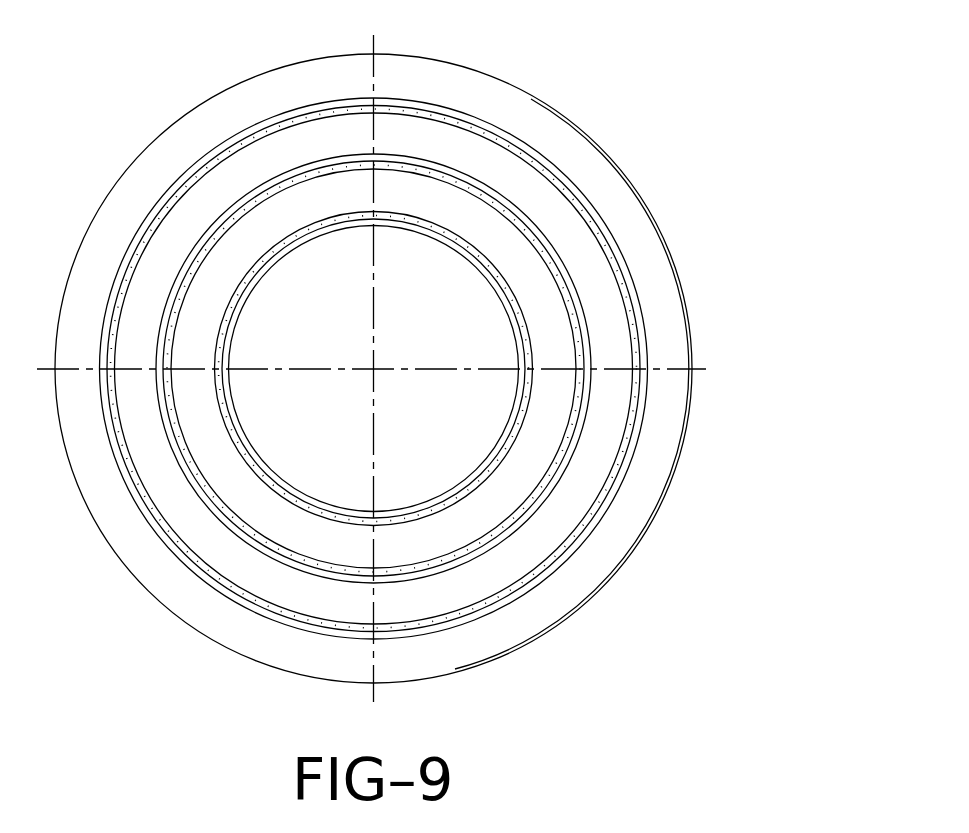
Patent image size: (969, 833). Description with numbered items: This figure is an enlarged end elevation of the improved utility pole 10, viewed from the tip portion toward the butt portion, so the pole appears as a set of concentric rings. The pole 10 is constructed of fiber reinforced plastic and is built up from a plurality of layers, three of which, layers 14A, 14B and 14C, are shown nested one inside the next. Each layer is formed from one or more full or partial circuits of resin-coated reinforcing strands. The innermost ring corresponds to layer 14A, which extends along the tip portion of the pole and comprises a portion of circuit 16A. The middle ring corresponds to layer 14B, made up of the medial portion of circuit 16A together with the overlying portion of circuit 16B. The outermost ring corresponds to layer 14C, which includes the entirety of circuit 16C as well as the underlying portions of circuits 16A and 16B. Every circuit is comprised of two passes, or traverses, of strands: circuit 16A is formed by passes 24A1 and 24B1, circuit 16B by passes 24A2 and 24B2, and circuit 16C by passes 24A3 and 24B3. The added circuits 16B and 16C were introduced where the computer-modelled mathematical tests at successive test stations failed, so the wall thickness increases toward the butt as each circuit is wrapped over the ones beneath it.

The utility pole 10 is at (632, 148).
The layer 14A is at (447, 547).
The layer 14B is at (558, 503).
The layer 14C is at (578, 562).
The circuit 16A is at (293, 497).
The circuit 16B is at (570, 443).
The circuit 16C is at (628, 452).
The pass 24A1 is at (313, 232).
The pass 24B1 is at (433, 227).
The pass 24A2 is at (183, 295).
The pass 24B2 is at (583, 312).
The pass 24A3 is at (313, 118).
The pass 24B3 is at (447, 108).